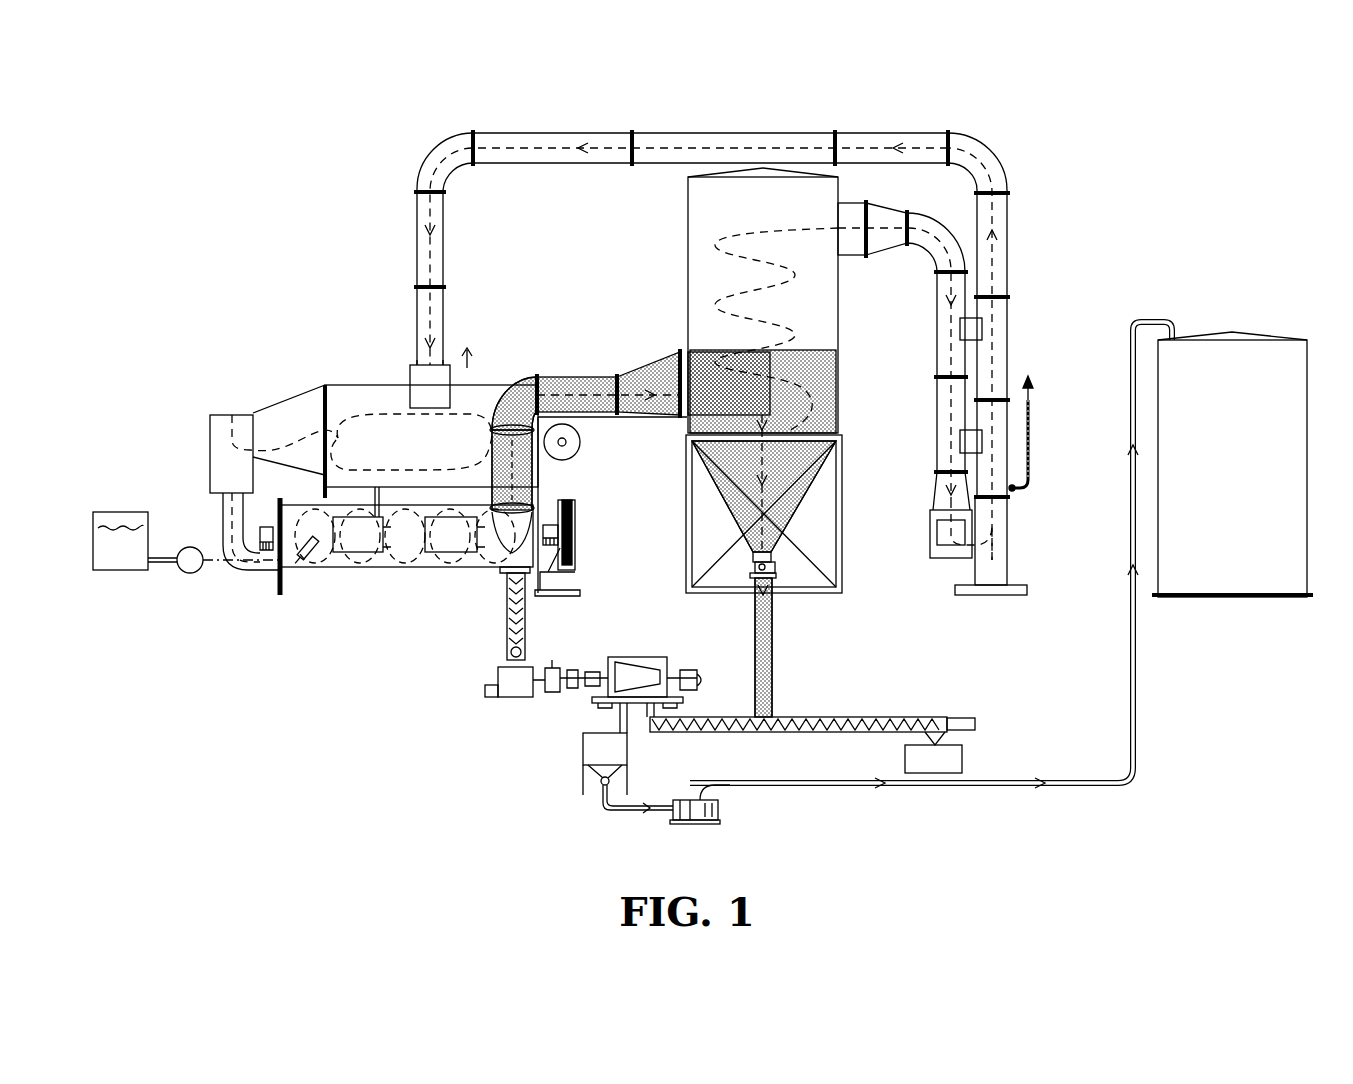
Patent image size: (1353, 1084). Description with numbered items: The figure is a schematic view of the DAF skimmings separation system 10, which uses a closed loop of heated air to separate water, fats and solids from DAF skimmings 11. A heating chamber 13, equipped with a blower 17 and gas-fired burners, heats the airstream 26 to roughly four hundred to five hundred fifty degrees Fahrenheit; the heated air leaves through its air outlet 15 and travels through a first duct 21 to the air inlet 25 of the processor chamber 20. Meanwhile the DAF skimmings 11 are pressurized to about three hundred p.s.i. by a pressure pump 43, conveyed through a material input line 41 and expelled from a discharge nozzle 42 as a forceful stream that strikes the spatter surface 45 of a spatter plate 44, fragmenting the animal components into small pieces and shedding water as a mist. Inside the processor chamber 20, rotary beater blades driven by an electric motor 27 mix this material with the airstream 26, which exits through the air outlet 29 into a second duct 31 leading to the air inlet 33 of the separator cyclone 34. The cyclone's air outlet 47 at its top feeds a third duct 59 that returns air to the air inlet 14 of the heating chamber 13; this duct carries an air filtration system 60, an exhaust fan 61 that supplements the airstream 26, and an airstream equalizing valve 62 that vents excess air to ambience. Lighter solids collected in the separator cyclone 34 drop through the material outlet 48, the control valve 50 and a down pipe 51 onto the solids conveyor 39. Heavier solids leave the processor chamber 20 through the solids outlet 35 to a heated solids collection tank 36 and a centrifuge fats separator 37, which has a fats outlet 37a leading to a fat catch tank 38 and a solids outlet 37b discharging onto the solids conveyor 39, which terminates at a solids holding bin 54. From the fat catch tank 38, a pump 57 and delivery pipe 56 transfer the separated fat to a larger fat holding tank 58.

The DAF skimmings separation system 10 is at (1063, 172).
The DAF skimmings 11 is at (108, 565).
The heating chamber 13 is at (365, 385).
The air inlet 14 is at (450, 382).
The air outlet 15 is at (250, 420).
The blower 17 is at (580, 442).
The processor chamber 20 is at (333, 567).
The first duct 21 is at (225, 512).
The air inlet 25 is at (284, 592).
The airstream 26 is at (531, 133).
The electric motor 27 is at (575, 540).
The air outlet 29 is at (540, 505).
The second duct 31 is at (568, 377).
The air inlet 33 is at (650, 343).
The separator cyclone 34 is at (790, 368).
The solids outlet 35 is at (505, 578).
The heated solids collection tank 36 is at (512, 696).
The centrifuge fats separator 37 is at (623, 657).
The liquid outlet 37a is at (623, 705).
The solids outlet 37b is at (648, 707).
The fat catch tank 38 is at (583, 775).
The solids conveyor 39 is at (760, 726).
The material input line 41 is at (216, 563).
The discharge nozzle 42 is at (262, 530).
The pressure pump 43 is at (186, 572).
The spatter plate 44 is at (306, 565).
The spatter surface 45 is at (345, 548).
The air outlet 47 is at (838, 218).
The material outlet 48 is at (770, 552).
The control valve 50 is at (775, 563).
The down pipe 51 is at (772, 660).
The solids holding bin 54 is at (962, 760).
The delivery pipe 56 is at (780, 788).
The pump 57 is at (690, 822).
The fat holding tank 58 is at (1258, 597).
The third duct 59 is at (1007, 222).
The air filtration system 60 is at (965, 555).
The exhaust fan 61 is at (1007, 548).
The airstream equalizing valve 62 is at (1015, 490).